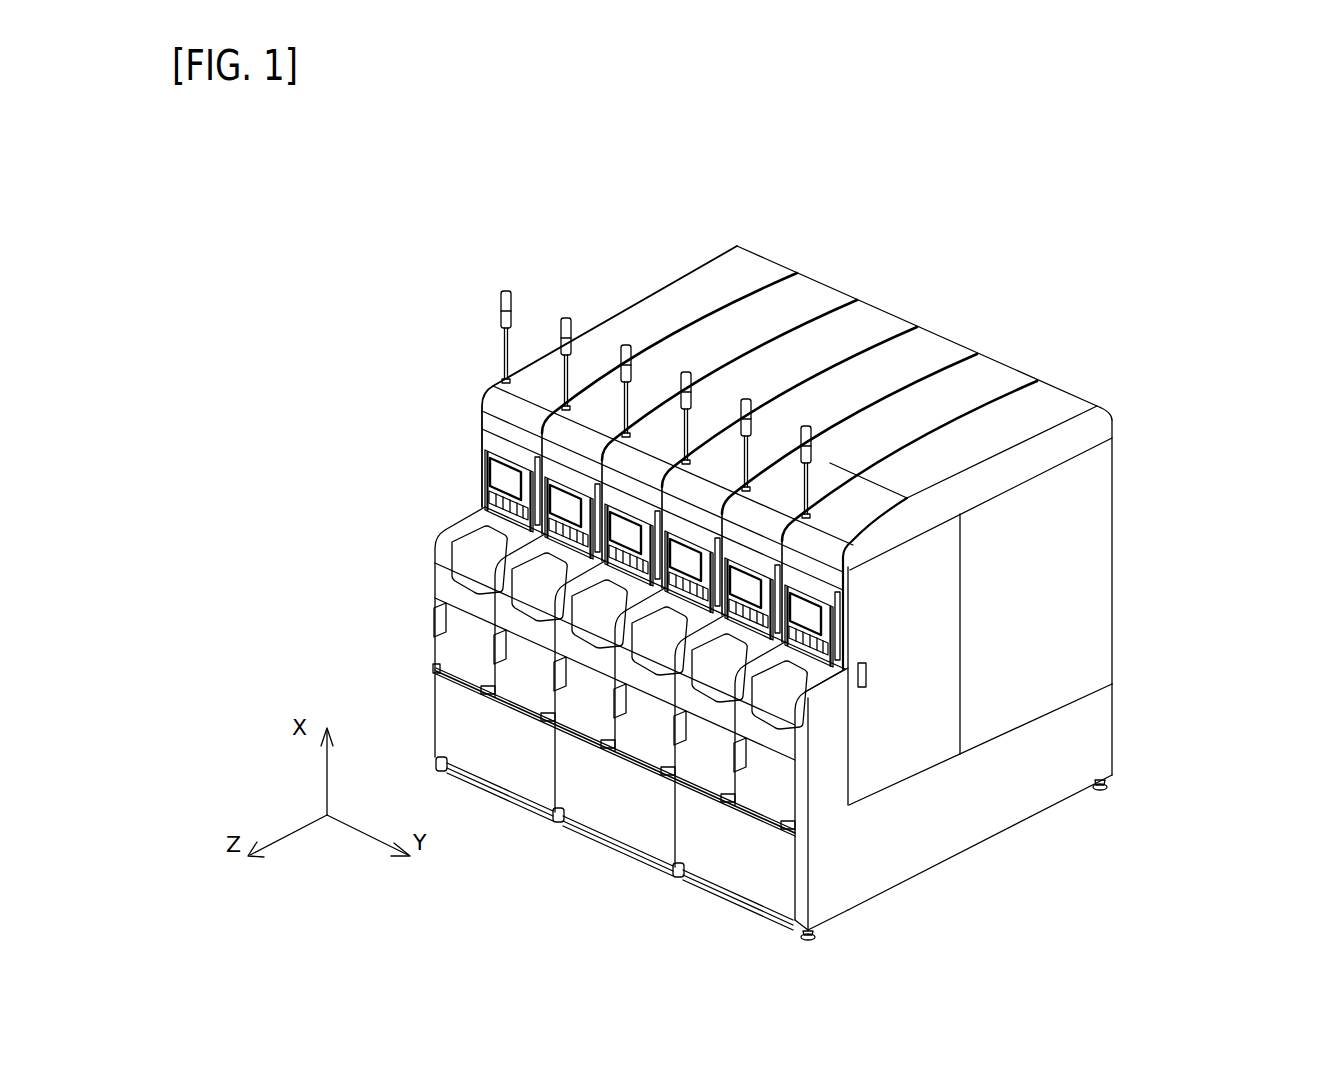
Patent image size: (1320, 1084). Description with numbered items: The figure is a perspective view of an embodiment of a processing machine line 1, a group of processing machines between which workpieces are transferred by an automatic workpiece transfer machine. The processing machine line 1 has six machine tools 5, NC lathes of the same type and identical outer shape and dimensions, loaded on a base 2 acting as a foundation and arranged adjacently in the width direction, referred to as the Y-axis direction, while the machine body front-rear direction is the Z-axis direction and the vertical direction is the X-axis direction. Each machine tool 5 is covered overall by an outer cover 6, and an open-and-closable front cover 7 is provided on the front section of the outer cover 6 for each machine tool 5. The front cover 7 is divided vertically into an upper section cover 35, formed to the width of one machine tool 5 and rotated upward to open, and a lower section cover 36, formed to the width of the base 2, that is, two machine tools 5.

The processing machine line 1 is at (928, 252).
The base 2 is at (1060, 748).
The machine tool 5 is at (1044, 398).
The outer cover 6 is at (1060, 618).
The front cover 7 is at (827, 828).
The upper section cover 35 is at (763, 790).
The lower section cover 36 is at (687, 848).